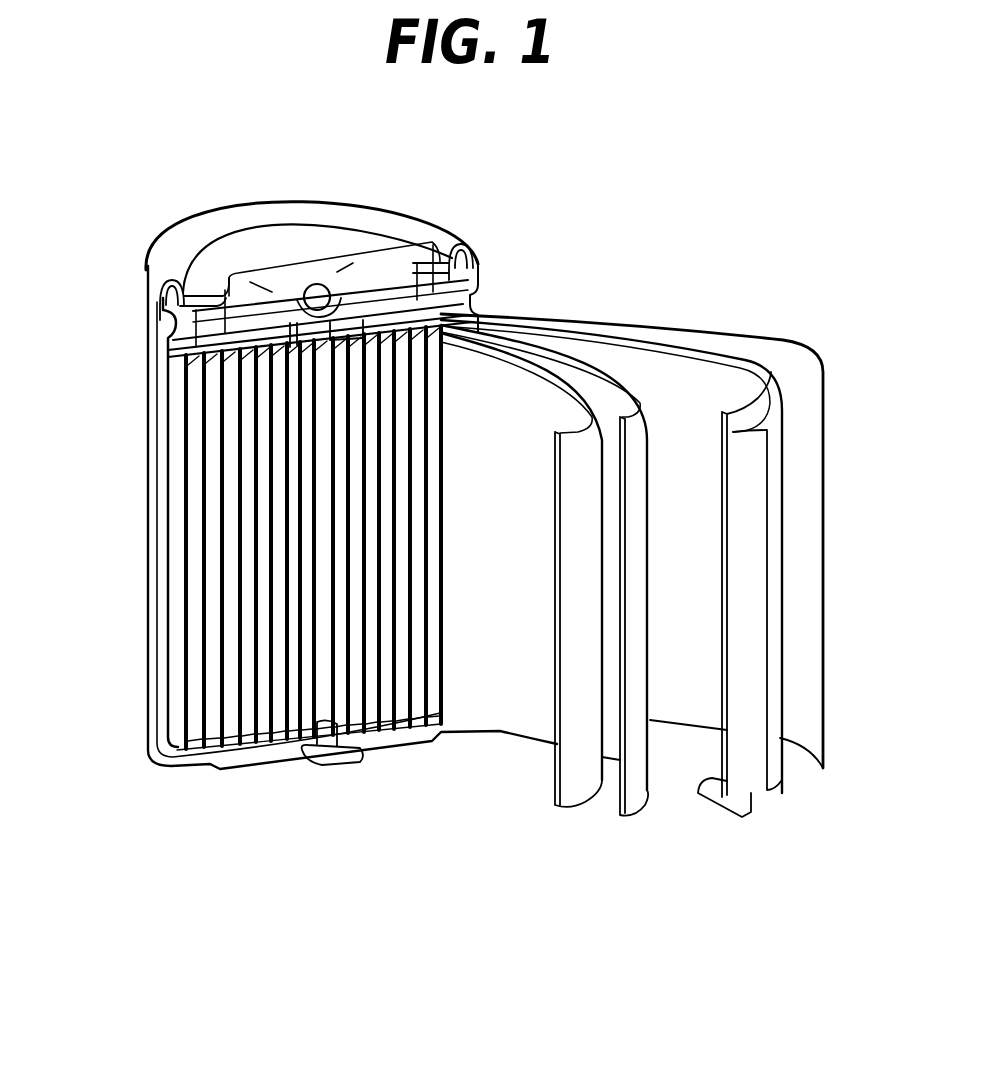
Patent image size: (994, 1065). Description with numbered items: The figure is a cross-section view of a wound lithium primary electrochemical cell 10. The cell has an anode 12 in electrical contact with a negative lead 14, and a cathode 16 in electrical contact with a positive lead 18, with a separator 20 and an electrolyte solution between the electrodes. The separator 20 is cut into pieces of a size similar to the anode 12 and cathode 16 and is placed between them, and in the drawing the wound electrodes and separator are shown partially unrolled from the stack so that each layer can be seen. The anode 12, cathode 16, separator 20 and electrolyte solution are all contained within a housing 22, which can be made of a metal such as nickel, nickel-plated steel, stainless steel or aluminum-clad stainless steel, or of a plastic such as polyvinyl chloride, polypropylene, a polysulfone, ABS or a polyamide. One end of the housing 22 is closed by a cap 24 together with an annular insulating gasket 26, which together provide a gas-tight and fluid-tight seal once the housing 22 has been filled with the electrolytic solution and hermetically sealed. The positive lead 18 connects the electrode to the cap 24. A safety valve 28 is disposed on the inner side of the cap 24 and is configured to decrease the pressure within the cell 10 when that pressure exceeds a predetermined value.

The lithium primary electrochemical cell 10 is at (693, 211).
The anode 12 is at (784, 754).
The negative lead 14 is at (756, 797).
The cathode 16 is at (583, 796).
The positive lead 18 is at (337, 315).
The separator 20 is at (644, 426).
The housing 22 is at (161, 769).
The cap 24 is at (302, 246).
The annular insulating gasket 26 is at (163, 292).
The safety valve 28 is at (382, 279).